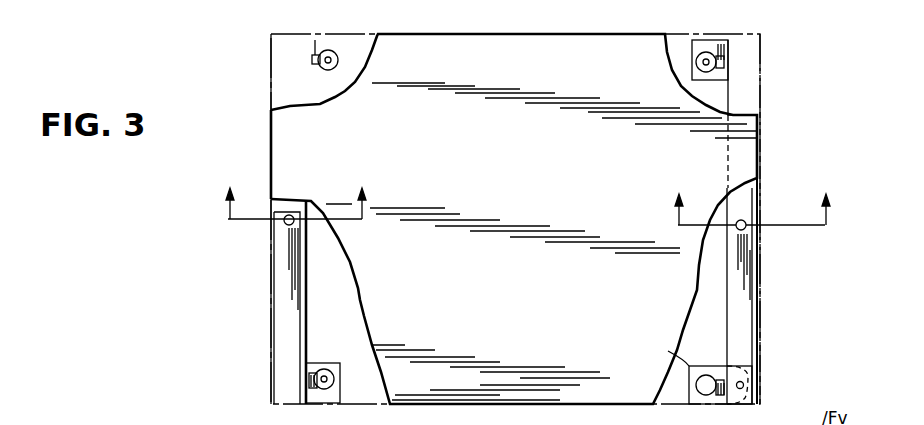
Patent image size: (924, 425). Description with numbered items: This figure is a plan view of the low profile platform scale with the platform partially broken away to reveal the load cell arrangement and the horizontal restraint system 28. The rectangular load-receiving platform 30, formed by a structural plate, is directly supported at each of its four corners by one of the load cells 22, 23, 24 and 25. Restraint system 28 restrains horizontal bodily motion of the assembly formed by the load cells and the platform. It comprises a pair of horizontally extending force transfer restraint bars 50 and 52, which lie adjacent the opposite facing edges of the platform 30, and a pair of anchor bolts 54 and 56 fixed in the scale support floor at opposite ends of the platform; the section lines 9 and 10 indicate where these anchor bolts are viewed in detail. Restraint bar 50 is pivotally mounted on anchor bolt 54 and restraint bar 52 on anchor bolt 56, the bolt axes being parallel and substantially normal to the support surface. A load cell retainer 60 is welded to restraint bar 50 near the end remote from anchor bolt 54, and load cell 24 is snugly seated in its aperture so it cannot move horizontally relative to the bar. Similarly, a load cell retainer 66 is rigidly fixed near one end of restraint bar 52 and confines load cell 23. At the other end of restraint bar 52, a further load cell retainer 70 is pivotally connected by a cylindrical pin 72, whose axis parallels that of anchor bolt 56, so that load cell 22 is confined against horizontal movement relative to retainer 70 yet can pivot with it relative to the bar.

The load cell 22 is at (695, 385).
The load cell 23 is at (696, 62).
The load cell 24 is at (338, 402).
The load cell 25 is at (336, 51).
The horizontal restraint system 28 is at (760, 300).
The load-receiving platform 30 is at (502, 183).
The restraint bar 50 is at (280, 291).
The restraint bar 52 is at (748, 268).
The anchor bolt 54 is at (286, 225).
The anchor bolt 56 is at (748, 223).
The load cell retainer 60 is at (340, 363).
The load cell retainer 66 is at (694, 40).
The load cell retainer 70 is at (668, 351).
The cylindrical pin 72 is at (744, 383).
The section line 9- 9 is at (294, 214).
The section line 10- 10 is at (753, 218).